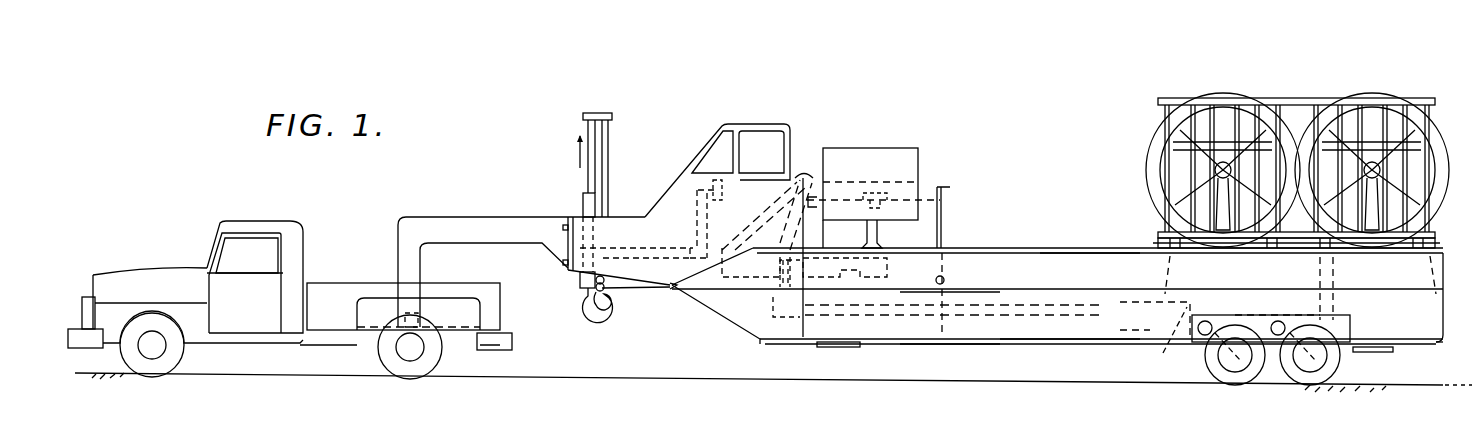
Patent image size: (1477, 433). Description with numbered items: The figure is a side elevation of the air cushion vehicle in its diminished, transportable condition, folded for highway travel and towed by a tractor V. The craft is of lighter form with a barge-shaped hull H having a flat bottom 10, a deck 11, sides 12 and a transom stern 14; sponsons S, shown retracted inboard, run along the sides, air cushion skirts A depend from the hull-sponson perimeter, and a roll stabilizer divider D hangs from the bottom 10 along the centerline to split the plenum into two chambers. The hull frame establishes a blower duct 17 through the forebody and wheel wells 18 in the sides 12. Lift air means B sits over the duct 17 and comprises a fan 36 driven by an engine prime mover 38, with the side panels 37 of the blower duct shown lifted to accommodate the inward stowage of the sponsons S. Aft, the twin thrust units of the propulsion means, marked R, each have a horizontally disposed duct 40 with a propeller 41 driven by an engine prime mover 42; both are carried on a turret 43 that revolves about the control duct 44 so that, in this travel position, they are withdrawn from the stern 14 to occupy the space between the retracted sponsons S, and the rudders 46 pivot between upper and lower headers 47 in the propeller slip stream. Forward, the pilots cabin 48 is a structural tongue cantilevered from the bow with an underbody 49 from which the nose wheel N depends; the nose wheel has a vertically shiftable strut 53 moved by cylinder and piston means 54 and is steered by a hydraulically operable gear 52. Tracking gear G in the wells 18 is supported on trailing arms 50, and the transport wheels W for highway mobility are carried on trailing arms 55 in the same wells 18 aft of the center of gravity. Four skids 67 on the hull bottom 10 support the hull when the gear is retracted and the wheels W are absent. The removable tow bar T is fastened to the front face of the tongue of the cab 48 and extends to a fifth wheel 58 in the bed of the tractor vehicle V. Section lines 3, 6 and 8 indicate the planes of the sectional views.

The section line 3- 3 is at (112, 86).
The section line 6- 6 is at (898, 105).
The section line 8- 8 is at (1135, 73).
The tractor vehicle V is at (309, 242).
The tow bar T is at (497, 219).
The double acting cylinder and piston means 54 is at (609, 192).
The hydraulically operable gear 52 is at (629, 246).
The pilots cabin 48 is at (763, 216).
The vertically shiftable strut 53 is at (577, 277).
The nose wheel N is at (593, 318).
The underbody 49 is at (661, 291).
The fifth wheel 58 is at (428, 318).
The lift air means B is at (939, 172).
The air cushion skirts A is at (1015, 247).
The sponsons S is at (1061, 267).
The engine prime mover 38 is at (740, 282).
The control duct 44 is at (796, 318).
The blower duct 17 is at (948, 279).
The deck 11 is at (1080, 297).
The tracking gear and wheel wells 18 is at (1111, 316).
The sides 12 is at (967, 296).
The flat bottom 10 is at (1064, 344).
The air cushion roll stabilizer divider D is at (972, 346).
The hull H is at (1039, 328).
The skids 67 is at (820, 348).
The transom stern 14 is at (1441, 345).
The trailing arms 50 is at (1178, 328).
The tracking gear G is at (1183, 333).
The trailing arms 55 is at (1225, 330).
The transport wheels W is at (1279, 371).
The side panels 37 is at (897, 155).
The fan 36 is at (945, 188).
The reel rack R is at (1147, 141).
The horizontally disposed duct 40 is at (1183, 118).
The rudders 46 is at (1226, 118).
The propeller 41 is at (1265, 118).
The engine prime mover 42 is at (1318, 100).
The turret 43 is at (1155, 243).
The upper and lower headers 47 is at (1292, 243).